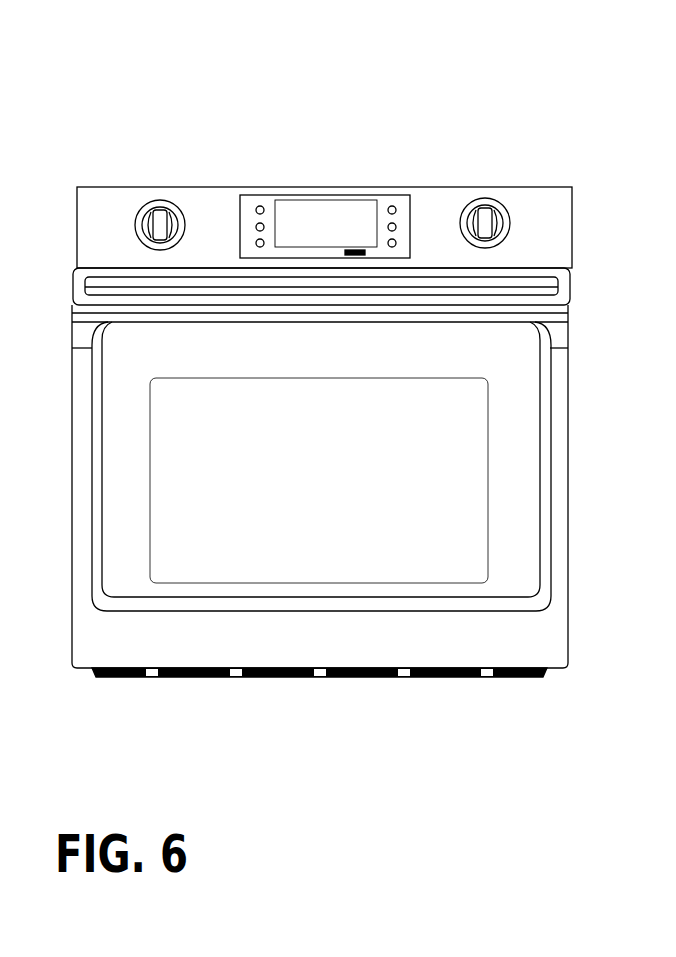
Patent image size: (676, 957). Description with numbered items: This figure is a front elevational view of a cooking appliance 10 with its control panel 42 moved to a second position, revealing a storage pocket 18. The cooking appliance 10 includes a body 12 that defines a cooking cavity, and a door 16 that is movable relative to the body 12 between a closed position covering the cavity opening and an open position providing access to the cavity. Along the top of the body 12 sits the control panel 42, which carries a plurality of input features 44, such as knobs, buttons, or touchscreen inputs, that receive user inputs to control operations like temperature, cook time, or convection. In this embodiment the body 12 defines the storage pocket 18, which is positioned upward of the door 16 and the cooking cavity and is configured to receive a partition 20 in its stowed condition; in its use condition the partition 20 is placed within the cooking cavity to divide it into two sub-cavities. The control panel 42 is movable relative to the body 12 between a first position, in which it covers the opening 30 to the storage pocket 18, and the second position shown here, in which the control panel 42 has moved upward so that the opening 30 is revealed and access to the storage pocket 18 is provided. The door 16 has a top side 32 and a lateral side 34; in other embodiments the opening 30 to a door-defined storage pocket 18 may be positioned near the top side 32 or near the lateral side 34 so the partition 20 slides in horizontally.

The cooking appliance 10 is at (608, 126).
The body 12 is at (583, 272).
The door 16 is at (558, 408).
The storage pocket 18 is at (420, 262).
The partition 20 is at (530, 287).
The opening 30 is at (109, 262).
The top side 32 is at (217, 305).
The lateral side 34 is at (72, 468).
The control panel 42 is at (445, 202).
The input features 44 is at (178, 207).